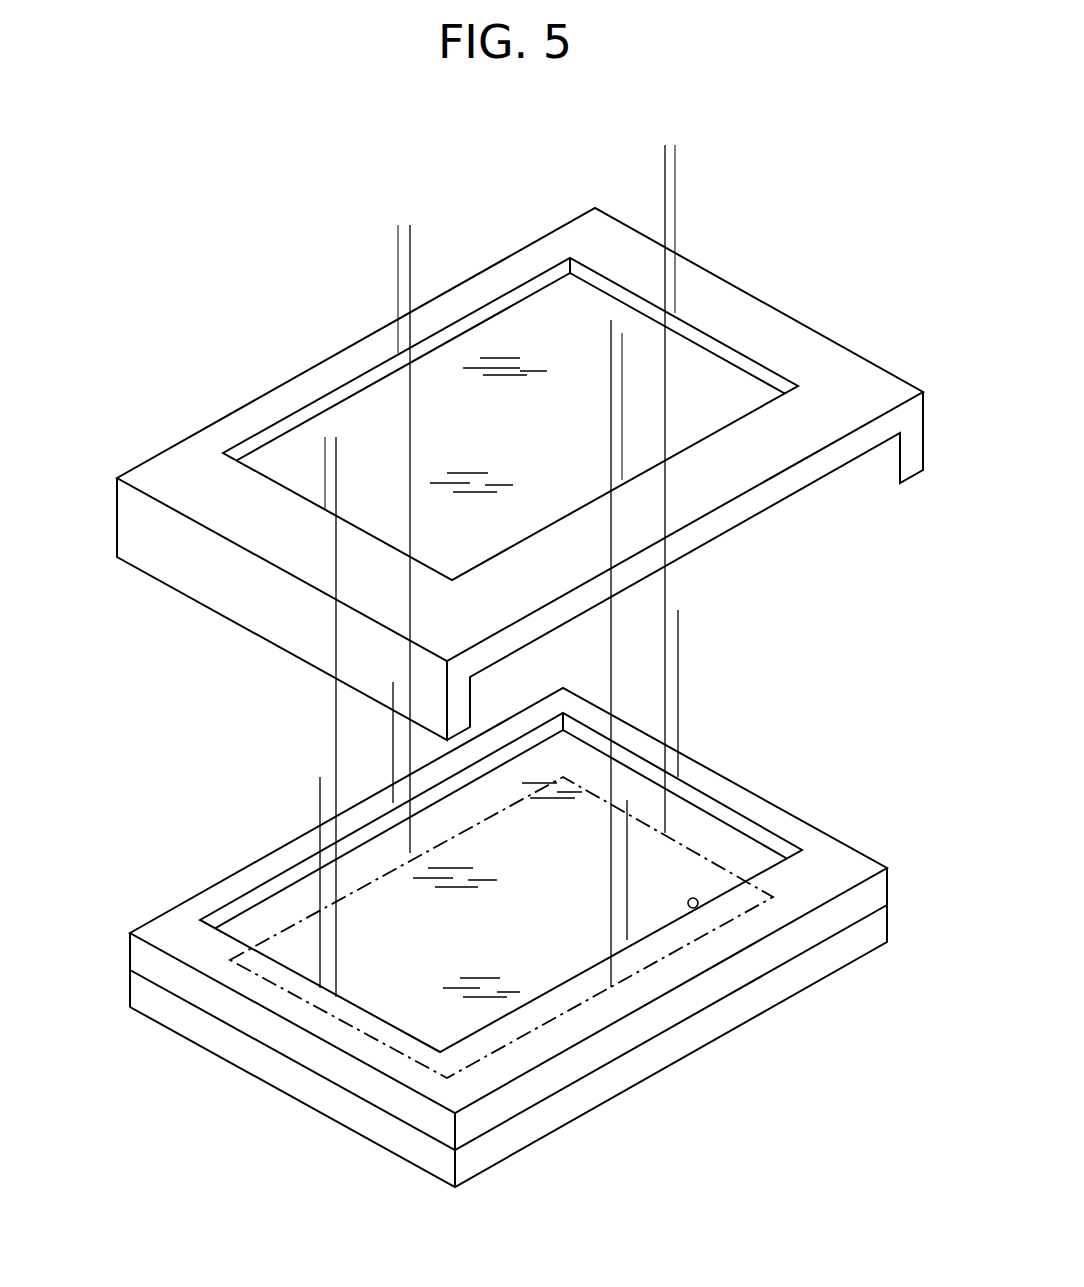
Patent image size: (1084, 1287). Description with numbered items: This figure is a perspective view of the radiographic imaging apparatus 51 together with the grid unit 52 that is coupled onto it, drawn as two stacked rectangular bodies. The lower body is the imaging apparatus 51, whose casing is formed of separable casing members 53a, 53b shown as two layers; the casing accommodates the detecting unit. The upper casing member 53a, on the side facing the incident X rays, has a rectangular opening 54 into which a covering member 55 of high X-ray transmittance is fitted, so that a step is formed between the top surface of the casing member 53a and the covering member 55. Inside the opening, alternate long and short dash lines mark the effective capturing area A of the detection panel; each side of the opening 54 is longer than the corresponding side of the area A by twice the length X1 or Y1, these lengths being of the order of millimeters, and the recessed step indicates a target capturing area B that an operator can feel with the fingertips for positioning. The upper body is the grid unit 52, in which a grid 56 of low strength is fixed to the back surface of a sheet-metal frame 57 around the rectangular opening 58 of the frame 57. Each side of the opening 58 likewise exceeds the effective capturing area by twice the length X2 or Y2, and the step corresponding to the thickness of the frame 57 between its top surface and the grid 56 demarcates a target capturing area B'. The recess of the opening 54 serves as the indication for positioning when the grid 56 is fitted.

The radiographic imaging apparatus 51 is at (477, 937).
The grid unit 52 is at (520, 451).
The casing member 53a is at (138, 955).
The casing member 53b is at (232, 1043).
The opening 54 is at (247, 898).
The covering member 55 is at (549, 963).
The grid 56 is at (288, 448).
The frame 57 is at (493, 268).
The opening 58 is at (533, 285).
The effective capturing area A is at (705, 860).
The target capturing area B is at (761, 966).
The target capturing area B' is at (781, 320).
The length X1 is at (433, 758).
The length X2 is at (442, 282).
The length Y1 is at (735, 608).
The length Y2 is at (620, 203).